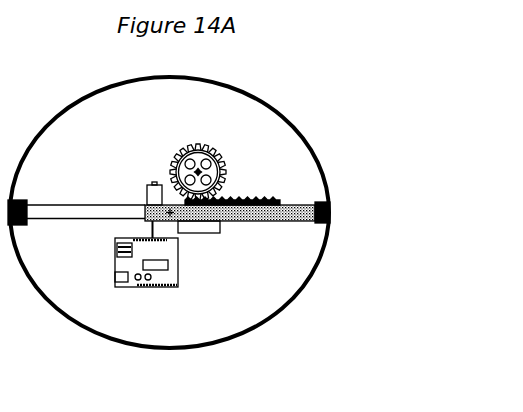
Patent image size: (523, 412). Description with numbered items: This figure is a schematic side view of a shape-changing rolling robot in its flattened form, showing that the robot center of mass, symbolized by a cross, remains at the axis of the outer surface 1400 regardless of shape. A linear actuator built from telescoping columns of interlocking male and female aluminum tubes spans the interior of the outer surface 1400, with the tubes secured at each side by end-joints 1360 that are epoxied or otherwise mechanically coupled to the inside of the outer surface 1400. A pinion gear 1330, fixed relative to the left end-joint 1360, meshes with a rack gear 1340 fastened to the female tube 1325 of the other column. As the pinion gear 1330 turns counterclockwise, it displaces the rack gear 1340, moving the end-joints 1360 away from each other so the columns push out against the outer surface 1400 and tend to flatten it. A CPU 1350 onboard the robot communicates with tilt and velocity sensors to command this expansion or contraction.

The outer surface 1400 is at (312, 142).
The end-joints 1360 is at (19, 200).
The female tube 1325 is at (237, 222).
The rack gear 1340 is at (243, 198).
The pinion gear 1330 is at (181, 143).
The CPU 1350 is at (160, 288).